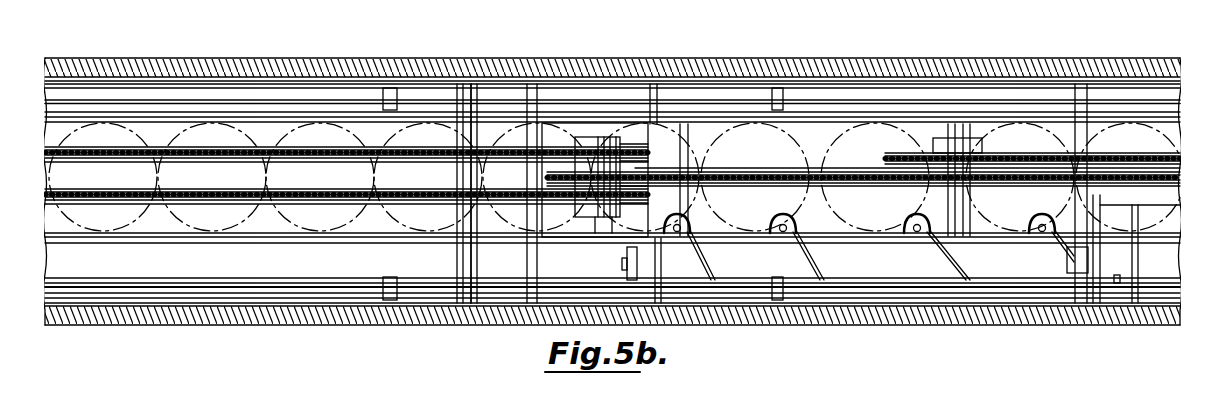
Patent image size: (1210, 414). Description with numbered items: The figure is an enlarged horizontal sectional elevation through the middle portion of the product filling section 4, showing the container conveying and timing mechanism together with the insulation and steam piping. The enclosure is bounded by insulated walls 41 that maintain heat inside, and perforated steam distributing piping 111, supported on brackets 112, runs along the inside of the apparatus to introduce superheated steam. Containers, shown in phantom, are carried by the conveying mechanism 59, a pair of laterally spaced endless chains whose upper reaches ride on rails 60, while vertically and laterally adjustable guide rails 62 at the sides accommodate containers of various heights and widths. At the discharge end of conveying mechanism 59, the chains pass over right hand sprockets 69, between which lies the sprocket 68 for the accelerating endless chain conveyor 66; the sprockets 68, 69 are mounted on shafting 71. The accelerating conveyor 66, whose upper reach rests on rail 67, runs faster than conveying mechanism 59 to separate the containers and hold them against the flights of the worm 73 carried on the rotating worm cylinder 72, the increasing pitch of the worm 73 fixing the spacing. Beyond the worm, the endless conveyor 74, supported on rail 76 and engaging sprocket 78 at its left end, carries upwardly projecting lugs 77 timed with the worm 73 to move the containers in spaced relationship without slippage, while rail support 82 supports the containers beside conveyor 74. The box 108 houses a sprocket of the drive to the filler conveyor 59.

The product filling section 4 is at (911, 326).
The insulated walls 41 is at (895, 60).
The conveying mechanism 59 is at (74, 160).
The rails 60 is at (441, 149).
The guide rails 62 is at (1040, 124).
The accelerating endless chain conveyor 66 is at (739, 176).
The rail 67 is at (763, 187).
The sprocket 68 is at (548, 176).
The right hand sprockets 69 is at (632, 156).
The shafting 71 is at (594, 225).
The rotating worm cylinder 72 is at (892, 267).
The worm 73 is at (795, 229).
The endless conveyor 74 is at (1020, 177).
The rail 76 is at (1119, 150).
The lugs 77 is at (935, 163).
The sprocket 78 is at (906, 154).
The rail support 82 is at (1148, 206).
The box 108 is at (600, 124).
The perforated steam distributing piping 111 is at (201, 100).
The brackets 112 is at (398, 90).